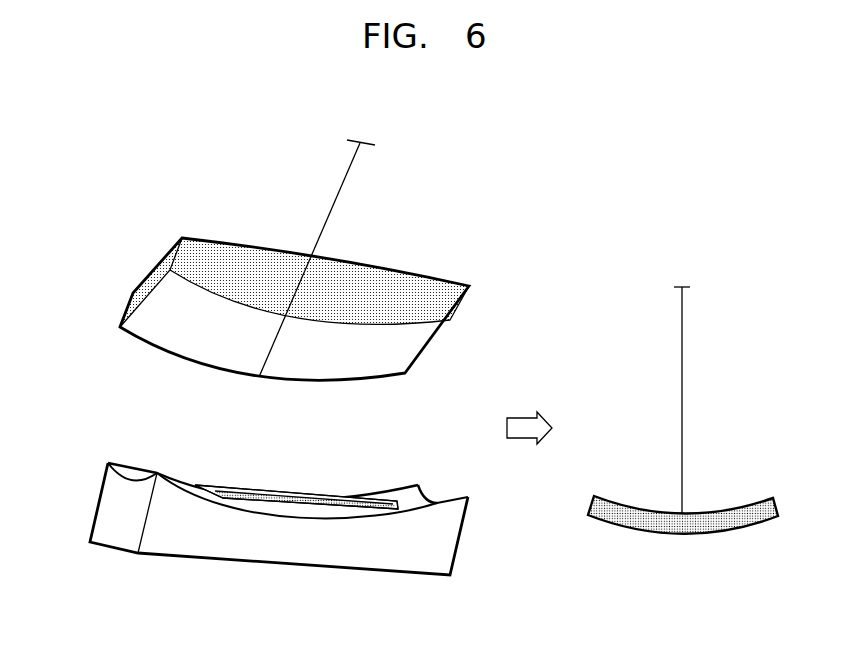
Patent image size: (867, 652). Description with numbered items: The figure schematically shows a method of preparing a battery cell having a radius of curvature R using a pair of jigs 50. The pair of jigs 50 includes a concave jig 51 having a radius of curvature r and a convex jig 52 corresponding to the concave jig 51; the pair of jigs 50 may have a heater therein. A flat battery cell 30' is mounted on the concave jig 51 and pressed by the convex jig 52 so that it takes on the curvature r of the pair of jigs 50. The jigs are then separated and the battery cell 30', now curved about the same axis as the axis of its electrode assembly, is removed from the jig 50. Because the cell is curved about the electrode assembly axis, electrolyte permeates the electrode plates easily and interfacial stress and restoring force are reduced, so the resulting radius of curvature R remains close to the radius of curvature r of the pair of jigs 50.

The pair of jigs 50 is at (515, 298).
The concave jig 51 is at (103, 507).
The convex jig 52 is at (132, 285).
The flat battery cell 30' is at (486, 448).